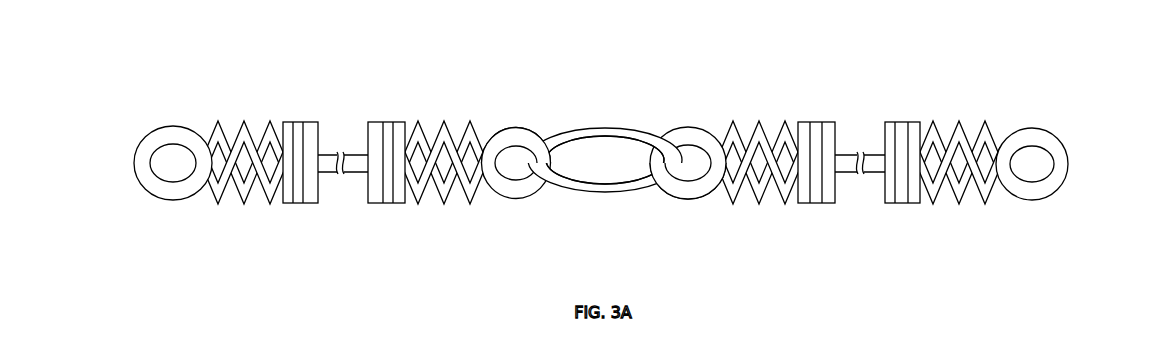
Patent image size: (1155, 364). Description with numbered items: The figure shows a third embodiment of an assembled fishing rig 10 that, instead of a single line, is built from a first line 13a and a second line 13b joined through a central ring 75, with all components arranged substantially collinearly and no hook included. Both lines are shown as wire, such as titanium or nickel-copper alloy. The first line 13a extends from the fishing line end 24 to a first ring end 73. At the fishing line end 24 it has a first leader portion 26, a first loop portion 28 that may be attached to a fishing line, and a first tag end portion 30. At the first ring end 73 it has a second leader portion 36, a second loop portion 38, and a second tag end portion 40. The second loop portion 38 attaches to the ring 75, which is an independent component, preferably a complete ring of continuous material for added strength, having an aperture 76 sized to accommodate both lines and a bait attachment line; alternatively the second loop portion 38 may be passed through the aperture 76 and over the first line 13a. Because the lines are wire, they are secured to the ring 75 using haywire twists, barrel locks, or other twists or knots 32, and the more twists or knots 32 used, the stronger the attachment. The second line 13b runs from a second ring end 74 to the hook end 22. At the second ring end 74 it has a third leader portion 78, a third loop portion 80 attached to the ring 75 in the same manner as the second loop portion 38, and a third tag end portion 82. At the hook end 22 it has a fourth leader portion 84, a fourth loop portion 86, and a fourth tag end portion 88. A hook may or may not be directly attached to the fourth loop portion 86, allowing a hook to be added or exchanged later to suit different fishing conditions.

The fishing rig 10 is at (95, 52).
The fishing line end 24 is at (146, 186).
The first loop portion 28 is at (154, 195).
The first tag end portion 30 is at (217, 119).
The first leader portion 26 is at (217, 205).
The first line 13a is at (328, 172).
The second tag end portion 40 is at (470, 120).
The second leader portion 36 is at (470, 205).
The first ring end 73 is at (516, 161).
The second loop portion 38 is at (513, 198).
The ring 75 is at (605, 105).
The aperture 76 is at (594, 150).
The second ring end 74 is at (688, 170).
The third loop portion 80 is at (687, 199).
The third tag end portion 82 is at (733, 120).
The third leader portion 78 is at (733, 205).
The second line 13b is at (849, 172).
The twists or knots 32 is at (958, 160).
The fourth tag end portion 88 is at (985, 121).
The fourth leader portion 84 is at (985, 205).
The hook end 22 is at (1065, 144).
The fourth loop portion 86 is at (1058, 189).